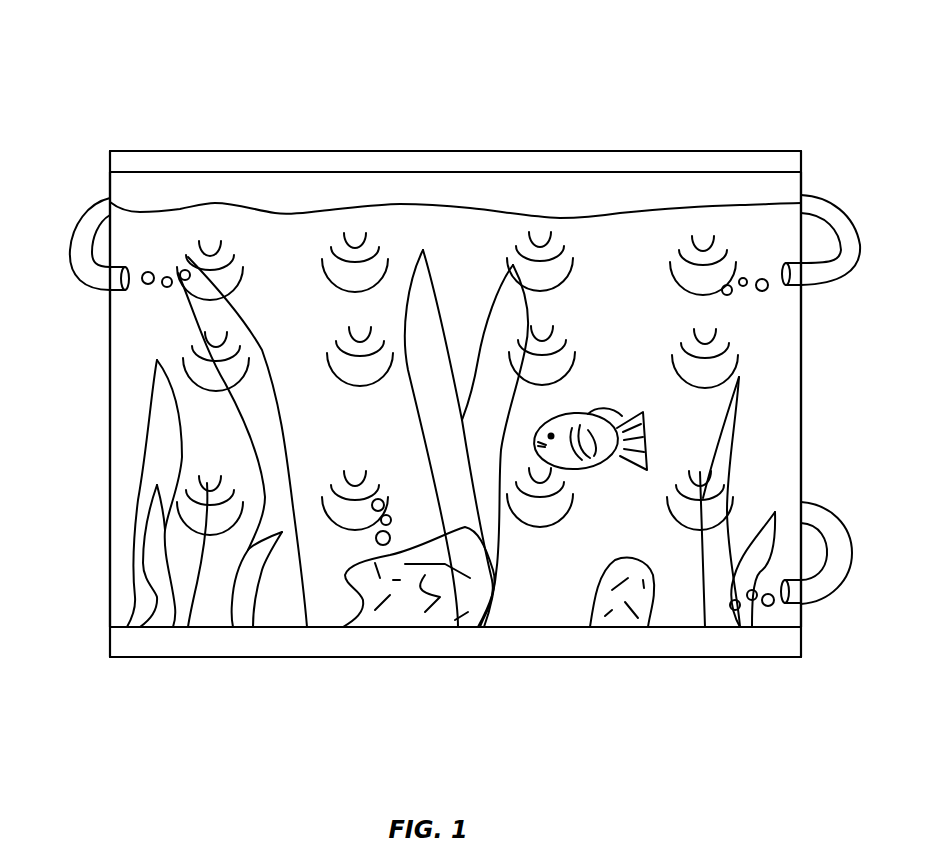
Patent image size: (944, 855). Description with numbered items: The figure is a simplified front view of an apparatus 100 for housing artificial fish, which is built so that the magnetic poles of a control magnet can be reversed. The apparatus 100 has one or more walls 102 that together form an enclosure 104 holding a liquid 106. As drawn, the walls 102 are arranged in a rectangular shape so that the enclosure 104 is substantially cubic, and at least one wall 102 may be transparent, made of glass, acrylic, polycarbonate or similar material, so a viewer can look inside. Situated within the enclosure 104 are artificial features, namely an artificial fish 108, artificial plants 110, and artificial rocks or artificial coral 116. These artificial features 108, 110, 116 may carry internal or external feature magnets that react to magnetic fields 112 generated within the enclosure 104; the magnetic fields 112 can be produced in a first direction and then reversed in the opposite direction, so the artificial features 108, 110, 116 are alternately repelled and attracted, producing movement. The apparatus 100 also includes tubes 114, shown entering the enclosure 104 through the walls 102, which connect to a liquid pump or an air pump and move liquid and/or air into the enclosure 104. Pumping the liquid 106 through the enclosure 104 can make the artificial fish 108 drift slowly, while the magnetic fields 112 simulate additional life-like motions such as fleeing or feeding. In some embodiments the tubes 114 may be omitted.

The apparatus 100 is at (217, 86).
The walls 102 is at (113, 405).
The enclosure 104 is at (120, 660).
The liquid 106 is at (162, 212).
The artificial fish 108 is at (598, 470).
The artificial plants 110 is at (398, 585).
The magnetic fields 112 is at (563, 360).
The tubes 114 is at (103, 275).
The artificial rocks or artificial coral 116 is at (282, 580).